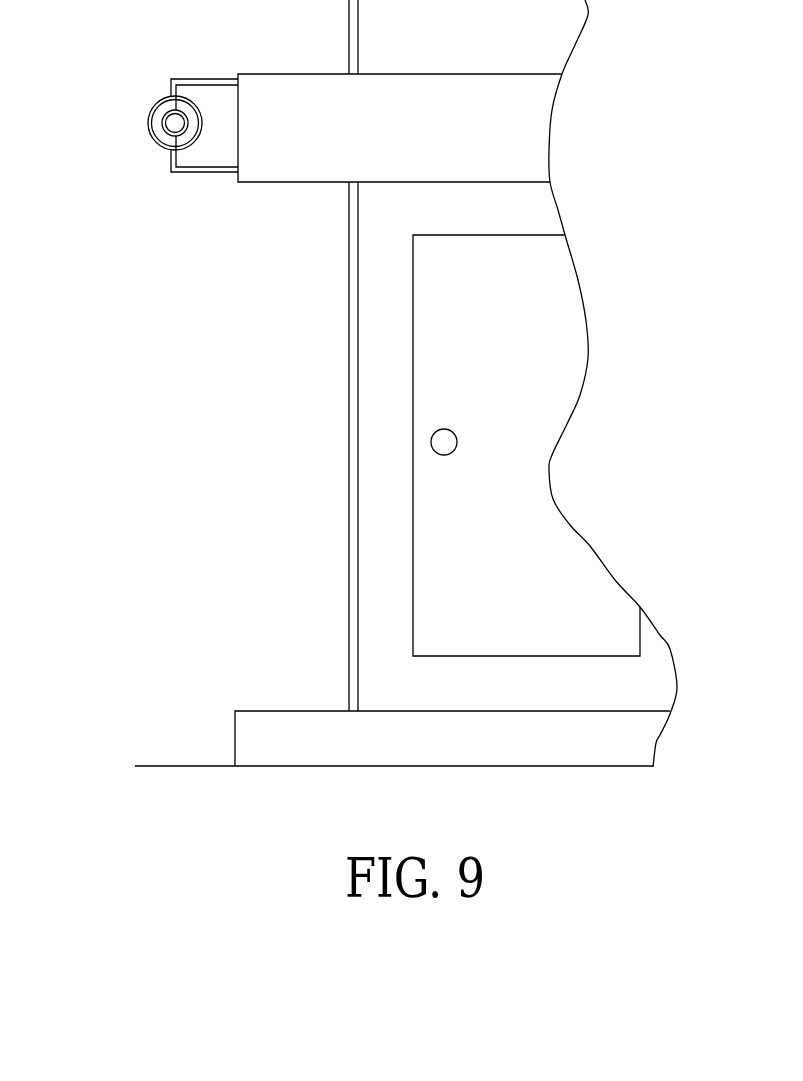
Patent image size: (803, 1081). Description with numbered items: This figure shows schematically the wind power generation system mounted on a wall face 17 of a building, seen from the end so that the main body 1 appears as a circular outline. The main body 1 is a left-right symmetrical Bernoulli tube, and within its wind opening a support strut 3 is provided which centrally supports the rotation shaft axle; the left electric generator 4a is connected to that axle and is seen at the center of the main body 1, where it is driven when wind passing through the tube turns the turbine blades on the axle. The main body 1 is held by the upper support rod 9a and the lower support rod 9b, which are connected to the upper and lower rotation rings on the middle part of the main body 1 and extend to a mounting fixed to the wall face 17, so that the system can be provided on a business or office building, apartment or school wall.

The main body 1 is at (164, 109).
The support strut 3 is at (152, 116).
The left electric generator 4a is at (163, 132).
The upper support rod 9a is at (171, 88).
The lower support rod 9b is at (178, 154).
The wall face 17 is at (374, 504).